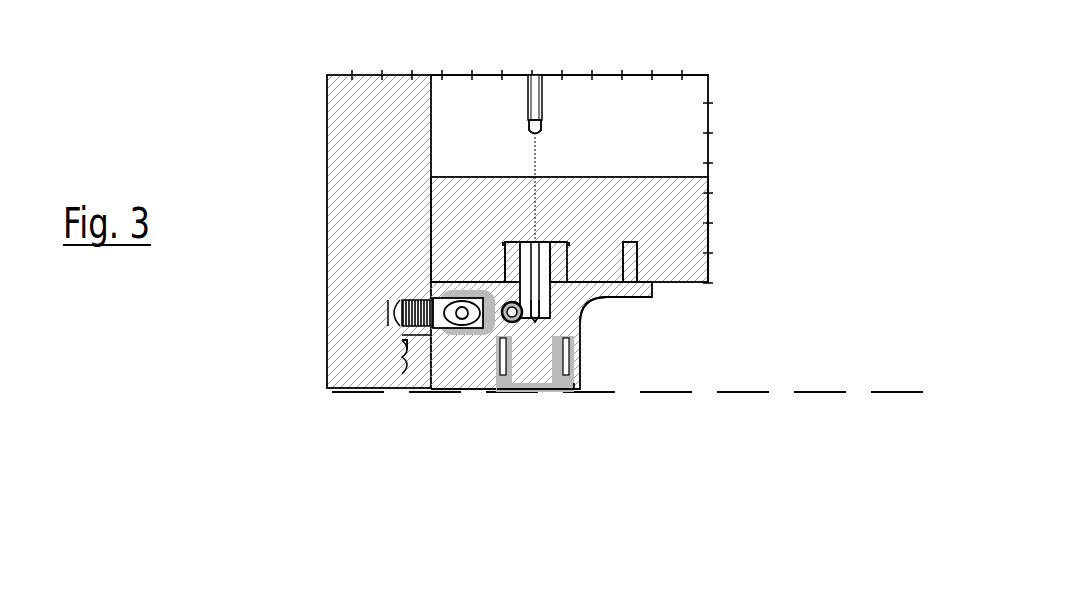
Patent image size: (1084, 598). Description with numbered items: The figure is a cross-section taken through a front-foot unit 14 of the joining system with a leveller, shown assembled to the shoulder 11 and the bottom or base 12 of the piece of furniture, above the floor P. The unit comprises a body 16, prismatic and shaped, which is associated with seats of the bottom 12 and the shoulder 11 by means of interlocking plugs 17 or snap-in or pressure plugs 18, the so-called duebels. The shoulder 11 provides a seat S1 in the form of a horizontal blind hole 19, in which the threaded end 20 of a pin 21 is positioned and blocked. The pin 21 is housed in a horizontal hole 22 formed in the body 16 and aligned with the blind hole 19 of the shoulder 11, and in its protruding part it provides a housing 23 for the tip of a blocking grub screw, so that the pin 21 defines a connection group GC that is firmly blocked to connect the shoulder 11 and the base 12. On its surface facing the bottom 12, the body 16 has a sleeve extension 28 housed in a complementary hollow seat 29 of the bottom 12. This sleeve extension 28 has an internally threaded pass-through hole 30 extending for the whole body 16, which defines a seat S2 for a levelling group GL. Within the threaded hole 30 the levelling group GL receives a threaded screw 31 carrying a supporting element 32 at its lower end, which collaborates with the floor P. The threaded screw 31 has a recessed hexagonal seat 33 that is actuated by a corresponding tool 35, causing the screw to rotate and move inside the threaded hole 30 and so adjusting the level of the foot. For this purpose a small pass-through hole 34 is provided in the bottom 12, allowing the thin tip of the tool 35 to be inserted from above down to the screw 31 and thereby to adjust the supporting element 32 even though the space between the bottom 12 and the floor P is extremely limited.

The shoulder 11 is at (340, 148).
The bottom or base 12 is at (688, 217).
The front-foot unit 14 is at (662, 370).
The body 16 is at (582, 360).
The interlocking plugs 17 is at (623, 248).
The snap-in or pressure plugs 18 is at (642, 246).
The horizontal blind hole 19 is at (390, 310).
The threaded end 20 is at (422, 307).
The pin 21 is at (430, 290).
The horizontal hole 22 is at (450, 328).
The housing 23 is at (460, 316).
The sleeve extension 28 is at (543, 265).
The hollow seat 29 is at (510, 246).
The pass-through hole 30 is at (543, 266).
The threaded screw 31 is at (538, 347).
The supporting element 32 is at (570, 393).
The recessed hexagonal seat 33 is at (534, 300).
The small pass-through hole 34 is at (528, 320).
The tool 35 is at (540, 93).
The seat S1 is at (385, 328).
The seat S2 is at (560, 305).
The connection group GC is at (417, 333).
The levelling group GL is at (557, 408).
The floor P is at (901, 392).